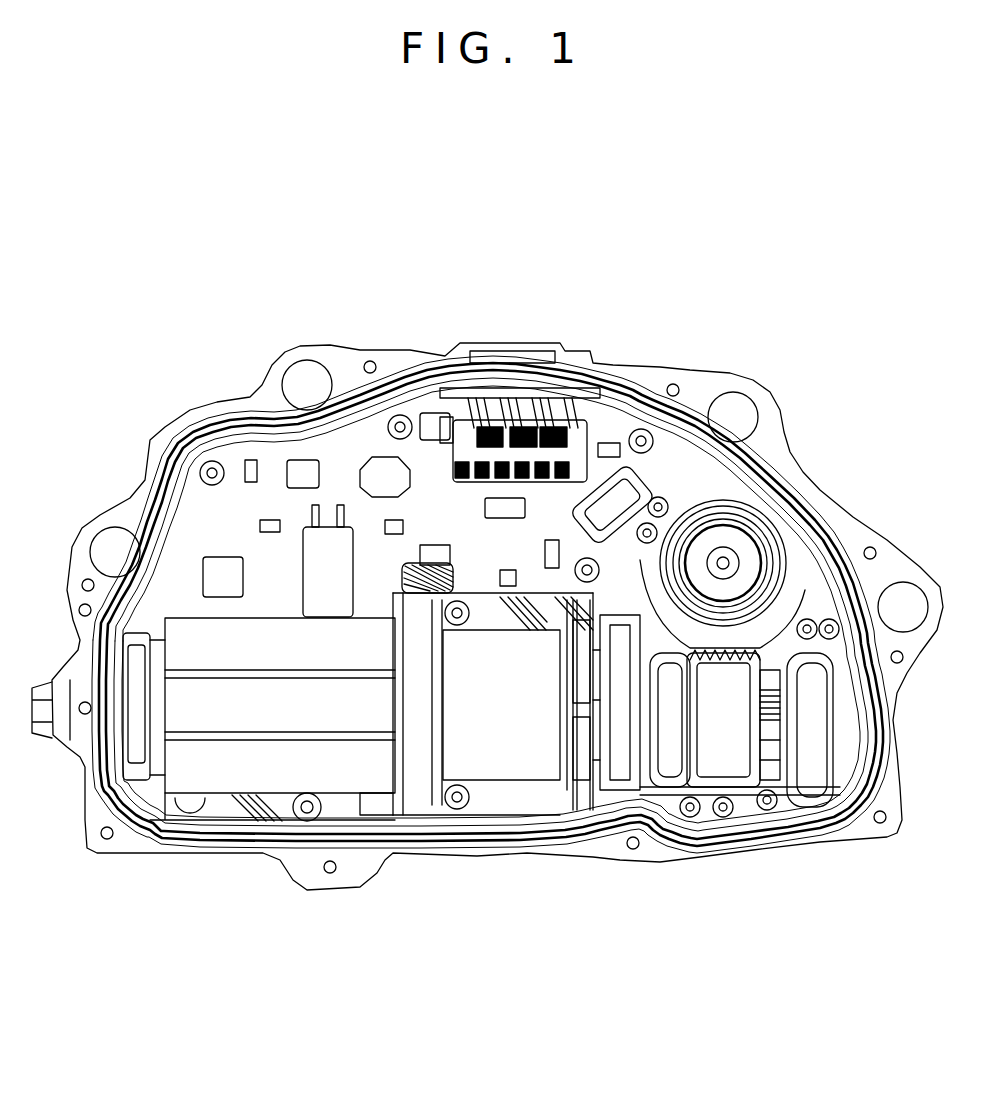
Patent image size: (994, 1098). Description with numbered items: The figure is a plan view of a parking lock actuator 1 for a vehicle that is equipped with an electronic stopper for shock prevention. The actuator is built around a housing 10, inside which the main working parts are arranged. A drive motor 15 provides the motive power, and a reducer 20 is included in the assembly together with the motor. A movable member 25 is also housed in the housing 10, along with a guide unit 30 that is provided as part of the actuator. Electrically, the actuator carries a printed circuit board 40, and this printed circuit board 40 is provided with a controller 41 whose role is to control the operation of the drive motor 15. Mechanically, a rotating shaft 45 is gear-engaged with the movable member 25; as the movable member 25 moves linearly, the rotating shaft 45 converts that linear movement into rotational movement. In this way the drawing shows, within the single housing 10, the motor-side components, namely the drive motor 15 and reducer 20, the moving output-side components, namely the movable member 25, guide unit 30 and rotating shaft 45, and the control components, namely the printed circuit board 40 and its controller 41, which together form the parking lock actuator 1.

The parking lock actuator 1 is at (697, 273).
The housing 10 is at (94, 856).
The drive motor 15 is at (238, 782).
The reducer 20 is at (530, 773).
The movable member 25 is at (713, 787).
The guide unit 30 is at (650, 838).
The printed circuit board (PCB) 40 is at (215, 415).
The controller 41 is at (207, 530).
The rotating shaft 45 is at (740, 540).